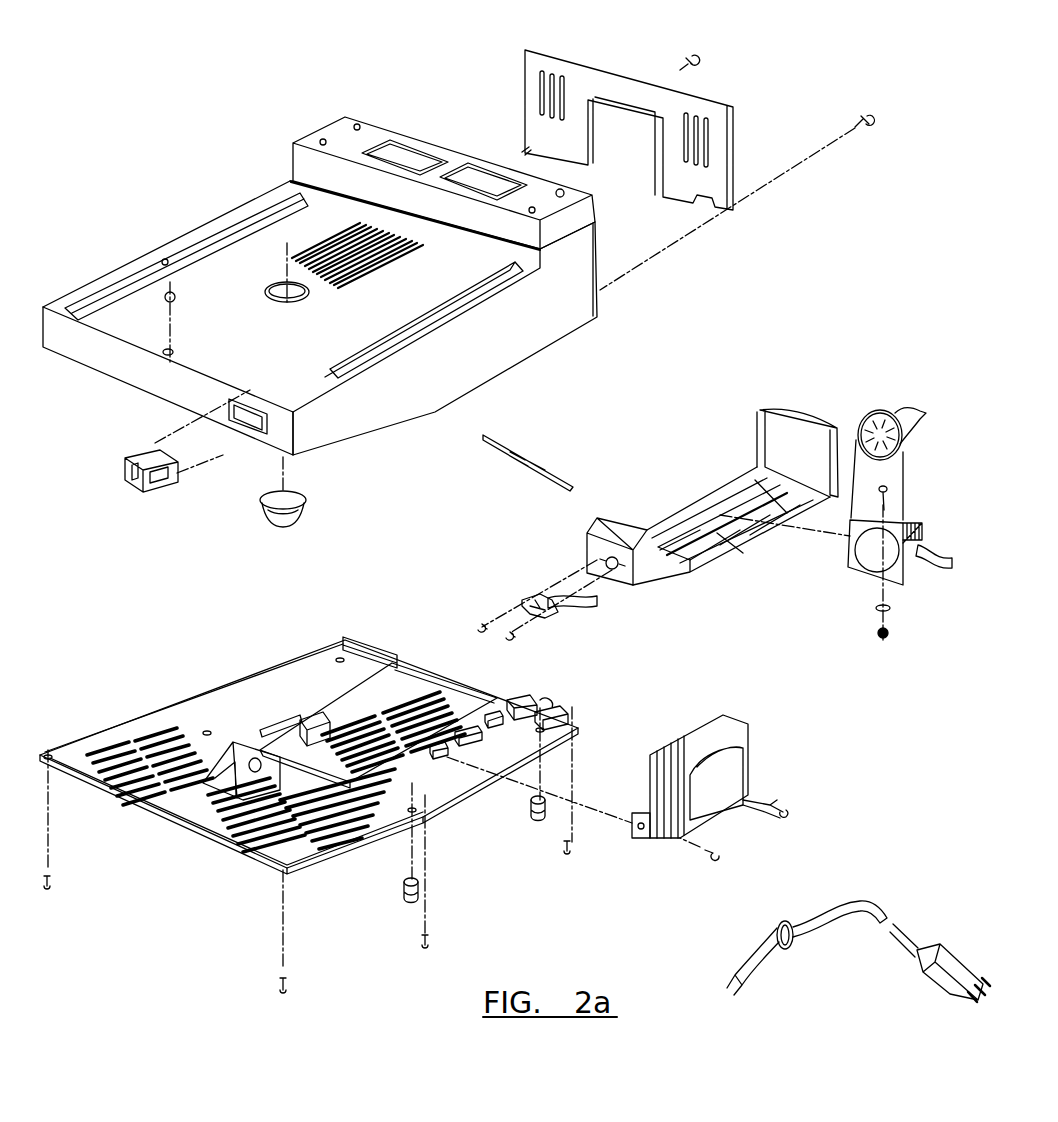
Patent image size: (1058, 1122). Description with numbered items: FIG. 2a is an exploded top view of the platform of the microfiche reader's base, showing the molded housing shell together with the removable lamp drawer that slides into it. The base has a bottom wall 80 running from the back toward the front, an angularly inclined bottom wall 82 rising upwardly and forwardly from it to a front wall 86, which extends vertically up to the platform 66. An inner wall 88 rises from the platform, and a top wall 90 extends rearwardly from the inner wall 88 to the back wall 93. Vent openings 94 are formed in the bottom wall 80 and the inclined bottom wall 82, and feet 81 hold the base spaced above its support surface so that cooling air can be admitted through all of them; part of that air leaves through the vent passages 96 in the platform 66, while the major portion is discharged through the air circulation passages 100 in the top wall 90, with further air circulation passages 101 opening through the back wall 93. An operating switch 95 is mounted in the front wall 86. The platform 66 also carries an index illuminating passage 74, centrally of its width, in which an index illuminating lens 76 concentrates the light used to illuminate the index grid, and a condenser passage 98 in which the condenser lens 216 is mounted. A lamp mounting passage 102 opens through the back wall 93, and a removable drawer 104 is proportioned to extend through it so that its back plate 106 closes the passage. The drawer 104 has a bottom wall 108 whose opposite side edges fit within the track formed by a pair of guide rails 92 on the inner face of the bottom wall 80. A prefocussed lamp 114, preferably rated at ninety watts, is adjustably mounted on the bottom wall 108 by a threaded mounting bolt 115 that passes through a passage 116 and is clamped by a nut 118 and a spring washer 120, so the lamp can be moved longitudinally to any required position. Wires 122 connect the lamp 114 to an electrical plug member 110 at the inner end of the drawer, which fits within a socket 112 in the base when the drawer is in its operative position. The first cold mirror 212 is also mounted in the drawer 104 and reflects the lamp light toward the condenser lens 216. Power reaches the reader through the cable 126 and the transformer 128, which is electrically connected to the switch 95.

The platform 66 is at (118, 323).
The index illuminating passage 74 is at (174, 350).
The index illuminating lens 76 is at (176, 297).
The bottom wall 80 is at (292, 695).
The feet 81 is at (531, 812).
The angularly inclined bottom wall 82 is at (250, 820).
The front wall 86 is at (130, 370).
The inner wall 88 is at (515, 242).
The top wall 90 is at (553, 200).
The guide rails 92 is at (483, 693).
The back wall 93 is at (717, 147).
The vent openings 94 is at (173, 753).
The operating switch 95 is at (153, 488).
The vent passages 96 is at (390, 257).
The condenser passage 98 is at (283, 280).
The air circulation passages 100 is at (480, 187).
The air circulation passages 101 is at (687, 118).
The lamp mounting passage 102 is at (637, 146).
The removable drawer 104 is at (705, 489).
The back plate 106 is at (790, 442).
The bottom wall 108 is at (723, 533).
The electrical plug member 110 is at (540, 595).
The socket 112 is at (297, 740).
The prefocussed lamp 114 is at (900, 412).
The mounting bolt 115 is at (887, 502).
The passage 116 is at (787, 513).
The nut 118 is at (878, 635).
The spring washer 120 is at (874, 608).
The wires 122 is at (759, 587).
The cable 126 is at (840, 917).
The transformer 128 is at (747, 745).
The first cold mirror 212 is at (523, 460).
The condenser lens 216 is at (307, 507).